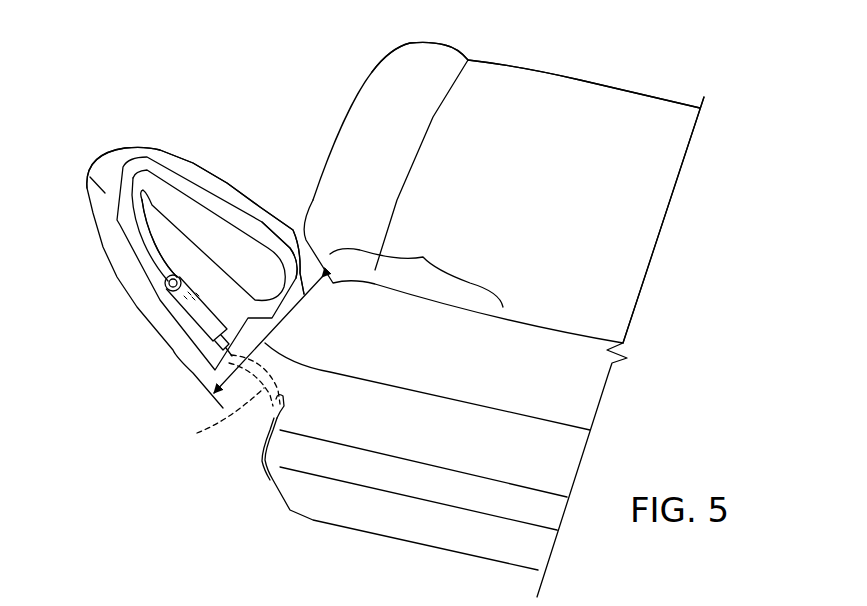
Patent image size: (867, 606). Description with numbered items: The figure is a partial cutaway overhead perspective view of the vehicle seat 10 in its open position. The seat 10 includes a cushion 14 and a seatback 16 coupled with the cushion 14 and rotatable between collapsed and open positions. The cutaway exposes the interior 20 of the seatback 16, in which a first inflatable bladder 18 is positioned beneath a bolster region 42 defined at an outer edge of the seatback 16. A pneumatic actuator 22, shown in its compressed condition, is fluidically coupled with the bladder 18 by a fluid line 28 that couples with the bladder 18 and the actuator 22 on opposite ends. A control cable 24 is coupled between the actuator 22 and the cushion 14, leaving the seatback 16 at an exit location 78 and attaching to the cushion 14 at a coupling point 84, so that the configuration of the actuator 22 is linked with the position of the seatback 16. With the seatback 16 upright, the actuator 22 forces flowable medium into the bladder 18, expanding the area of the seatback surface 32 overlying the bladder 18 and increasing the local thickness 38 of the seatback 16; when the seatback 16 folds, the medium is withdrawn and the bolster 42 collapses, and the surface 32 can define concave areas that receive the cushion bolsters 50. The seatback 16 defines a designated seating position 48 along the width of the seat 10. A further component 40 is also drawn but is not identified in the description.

The vehicle seat 10 is at (141, 103).
The cushion 14 is at (603, 107).
The seatback 16 is at (580, 390).
The first inflatable bladder 18 is at (218, 220).
The interior 20 is at (177, 244).
The pneumatic actuator 22 is at (183, 320).
The control cable 24 is at (222, 402).
The fluid line 28 is at (140, 221).
The seatback surface 32 is at (416, 273).
The thickness 38 is at (280, 320).
The outer housing 40 is at (167, 158).
The bolster region 42 is at (206, 167).
The designated seating position 48 is at (586, 201).
The cushion bolster 50 is at (428, 60).
The exit location 78 is at (273, 418).
The coupling point 84 is at (263, 467).